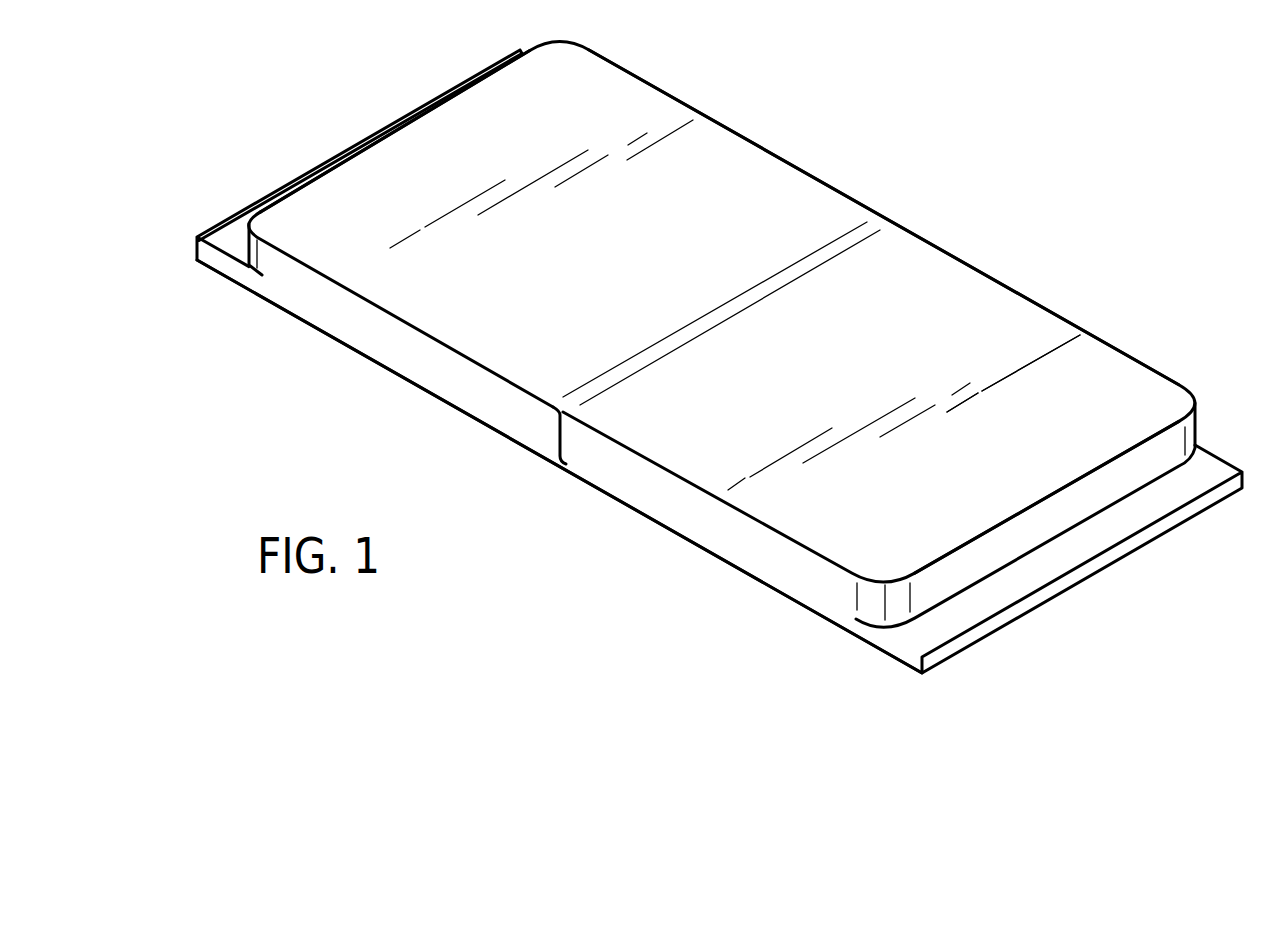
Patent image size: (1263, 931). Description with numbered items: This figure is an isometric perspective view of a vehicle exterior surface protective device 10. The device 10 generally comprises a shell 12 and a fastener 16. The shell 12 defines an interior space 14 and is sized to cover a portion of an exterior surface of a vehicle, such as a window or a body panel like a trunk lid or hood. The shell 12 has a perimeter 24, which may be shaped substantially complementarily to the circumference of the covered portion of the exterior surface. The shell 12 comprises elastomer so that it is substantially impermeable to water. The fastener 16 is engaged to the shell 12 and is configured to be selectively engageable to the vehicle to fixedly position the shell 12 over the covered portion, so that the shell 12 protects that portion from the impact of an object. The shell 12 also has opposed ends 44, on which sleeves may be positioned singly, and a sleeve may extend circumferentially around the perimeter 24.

The vehicle exterior surface protective device 10 is at (924, 130).
The shell 12 is at (965, 248).
The interior space 14 is at (1000, 321).
The fastener 16 is at (1072, 556).
The perimeter 24 is at (704, 570).
The opposed ends 44 is at (1038, 512).